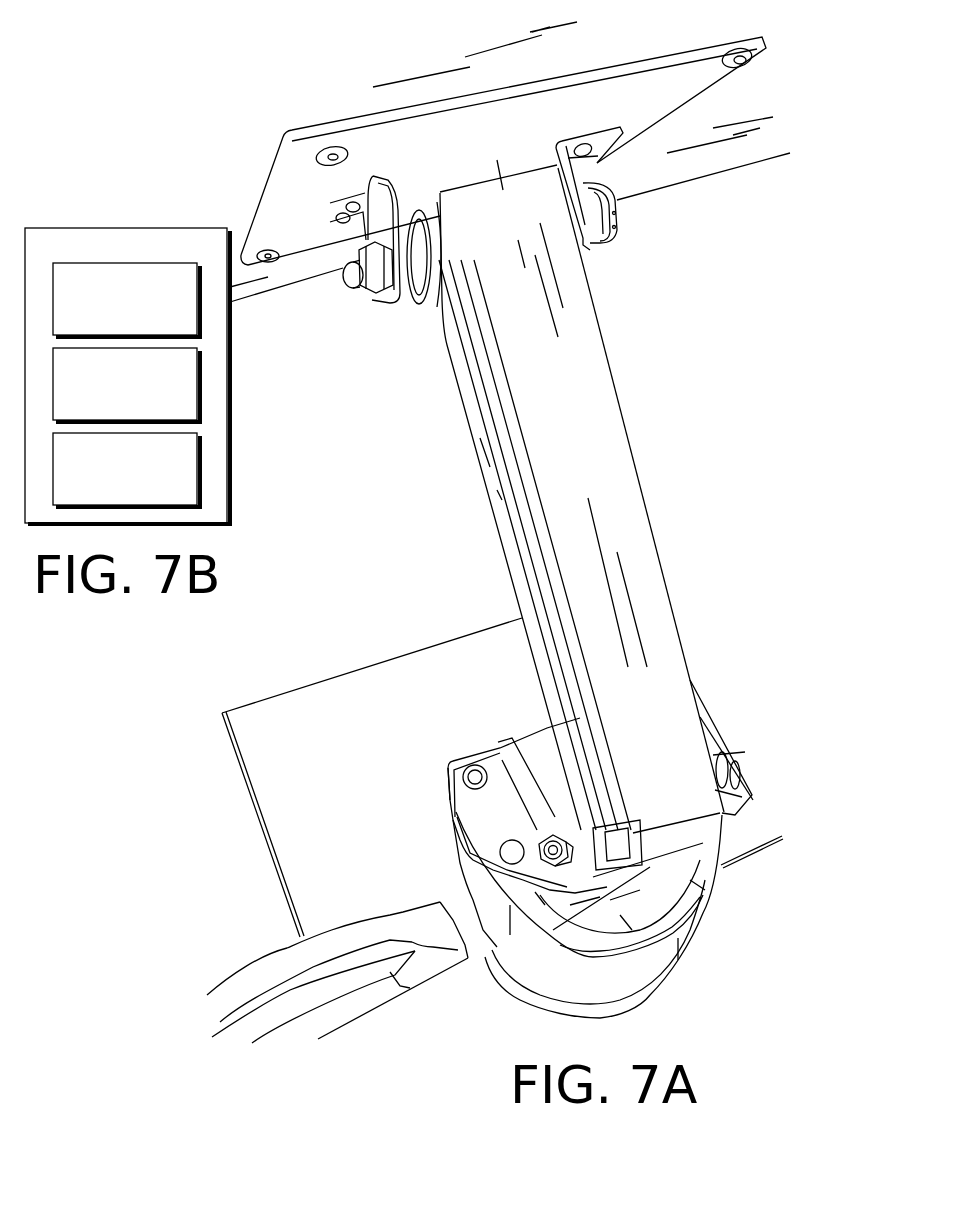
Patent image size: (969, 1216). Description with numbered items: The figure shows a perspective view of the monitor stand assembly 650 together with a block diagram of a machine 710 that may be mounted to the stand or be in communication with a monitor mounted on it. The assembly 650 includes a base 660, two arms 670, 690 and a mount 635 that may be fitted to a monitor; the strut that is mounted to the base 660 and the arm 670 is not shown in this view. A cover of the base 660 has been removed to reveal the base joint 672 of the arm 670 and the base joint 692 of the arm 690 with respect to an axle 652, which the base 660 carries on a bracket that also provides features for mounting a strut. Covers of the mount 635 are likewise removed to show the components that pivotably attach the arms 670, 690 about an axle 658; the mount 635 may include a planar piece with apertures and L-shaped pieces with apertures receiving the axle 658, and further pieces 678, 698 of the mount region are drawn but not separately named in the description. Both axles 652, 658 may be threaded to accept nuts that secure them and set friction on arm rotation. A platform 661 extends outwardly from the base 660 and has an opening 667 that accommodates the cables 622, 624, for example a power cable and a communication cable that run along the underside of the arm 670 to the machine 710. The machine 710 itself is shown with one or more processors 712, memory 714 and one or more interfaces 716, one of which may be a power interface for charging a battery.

In FIG. 7A, the machine 710 is at (226, 173).
In FIG. 7B, the machine 710 is at (189, 256).
In FIG. 7B, the processors 712 is at (106, 321).
In FIG. 7B, the memory 714 is at (106, 406).
In FIG. 7B, the interfaces 716 is at (106, 493).
In FIG. 7A, the monitor stand assembly 650 is at (753, 206).
In FIG. 7A, the mount 635 is at (592, 240).
In FIG. 7A, the axle 658 is at (350, 288).
In FIG. 7A, the mounting bracket 698 is at (430, 195).
In FIG. 7A, the mounting bracket 678 is at (503, 187).
In FIG. 7A, the arm 670 is at (620, 427).
In FIG. 7A, the arm 690 is at (481, 440).
In FIG. 7A, the base joint 692 is at (600, 825).
In FIG. 7A, the axle 652 is at (535, 847).
In FIG. 7A, the platform 661 is at (763, 803).
In FIG. 7A, the base joint 672 is at (717, 832).
In FIG. 7A, the base 660 is at (702, 910).
In FIG. 7A, the opening 667 is at (440, 902).
In FIG. 7A, the cable 622 is at (280, 962).
In FIG. 7A, the cable 624 is at (300, 1007).